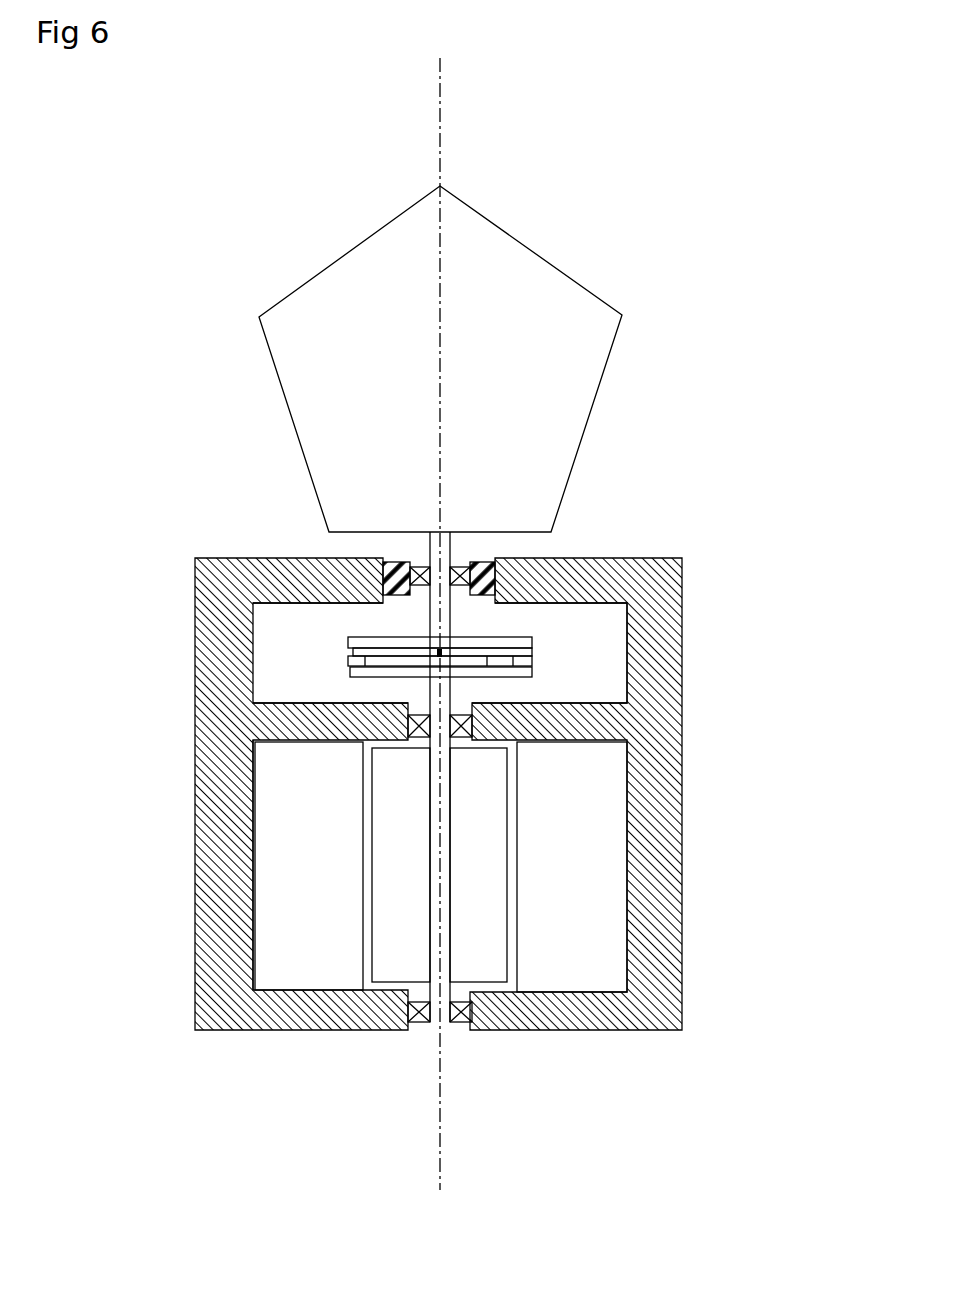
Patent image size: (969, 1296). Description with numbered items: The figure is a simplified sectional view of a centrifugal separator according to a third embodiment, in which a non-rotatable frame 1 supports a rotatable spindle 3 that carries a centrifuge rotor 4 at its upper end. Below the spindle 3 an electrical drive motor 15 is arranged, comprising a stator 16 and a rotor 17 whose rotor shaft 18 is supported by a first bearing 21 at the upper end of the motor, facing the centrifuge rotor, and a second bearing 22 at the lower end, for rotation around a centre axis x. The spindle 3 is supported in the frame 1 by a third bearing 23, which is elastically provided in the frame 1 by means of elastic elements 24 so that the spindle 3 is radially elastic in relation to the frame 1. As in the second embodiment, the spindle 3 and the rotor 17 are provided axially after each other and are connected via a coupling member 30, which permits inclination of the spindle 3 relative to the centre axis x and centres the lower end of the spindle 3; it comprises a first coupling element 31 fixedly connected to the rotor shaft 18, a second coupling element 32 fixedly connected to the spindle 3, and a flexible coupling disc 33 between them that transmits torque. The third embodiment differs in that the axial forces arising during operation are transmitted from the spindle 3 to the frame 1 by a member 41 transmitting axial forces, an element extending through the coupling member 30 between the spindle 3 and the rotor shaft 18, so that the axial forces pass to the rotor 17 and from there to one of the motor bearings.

The centre axis x is at (442, 97).
The frame 1 is at (224, 718).
The spindle 3 is at (433, 614).
The centrifuge rotor 4 is at (567, 354).
The electrical drive motor 15 is at (252, 770).
The stator 16 is at (297, 828).
The rotor 17 is at (403, 874).
The rotor shaft 18 is at (435, 915).
The first bearing 21 is at (473, 735).
The second bearing 22 is at (470, 1003).
The third bearing 23 is at (423, 567).
The elastic elements 24 is at (487, 562).
The coupling member 30 is at (328, 653).
The first coupling element 31 is at (532, 639).
The second coupling element 32 is at (532, 672).
The coupling disc 33 is at (532, 658).
The member transmitting axial forces 41 is at (437, 660).